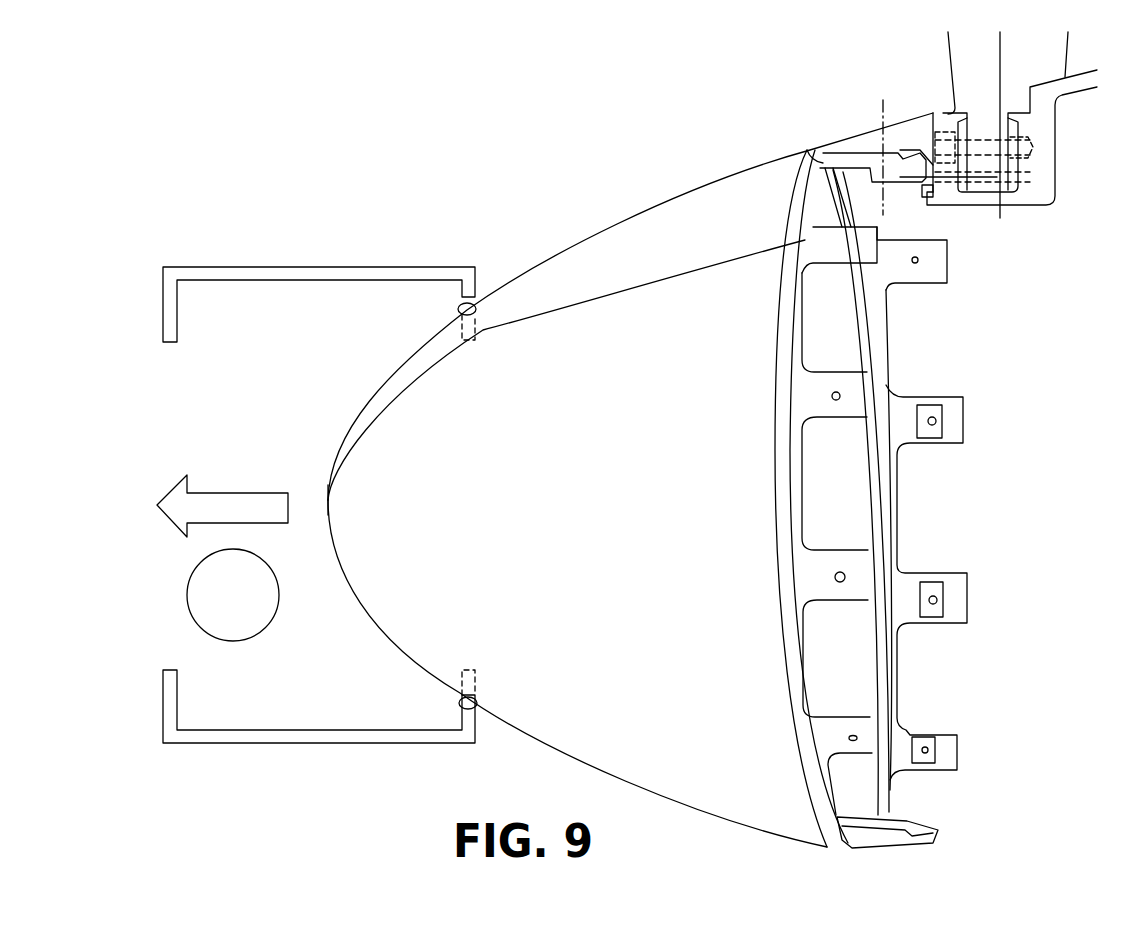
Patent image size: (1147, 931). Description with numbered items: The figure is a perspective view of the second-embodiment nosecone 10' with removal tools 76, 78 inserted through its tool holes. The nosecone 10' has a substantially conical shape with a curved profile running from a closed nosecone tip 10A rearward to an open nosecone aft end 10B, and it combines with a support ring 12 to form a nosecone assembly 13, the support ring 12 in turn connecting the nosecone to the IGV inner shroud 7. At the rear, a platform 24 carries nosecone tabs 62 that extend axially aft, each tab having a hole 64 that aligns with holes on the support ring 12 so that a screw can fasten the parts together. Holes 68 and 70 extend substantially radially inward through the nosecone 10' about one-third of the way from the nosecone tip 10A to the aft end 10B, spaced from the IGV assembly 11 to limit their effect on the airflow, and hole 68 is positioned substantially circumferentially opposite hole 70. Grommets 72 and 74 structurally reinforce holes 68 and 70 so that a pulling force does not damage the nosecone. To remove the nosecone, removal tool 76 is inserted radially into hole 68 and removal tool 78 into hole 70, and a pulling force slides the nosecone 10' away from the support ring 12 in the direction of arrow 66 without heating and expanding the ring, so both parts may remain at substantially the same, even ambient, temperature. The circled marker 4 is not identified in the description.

The engine 4 is at (233, 595).
The IGV inner shroud 7 is at (1057, 177).
The nosecone 10' is at (630, 475).
The nosecone tip 10A is at (328, 497).
The nosecone aft end 10B is at (938, 833).
The IGV assembly 11 is at (1037, 222).
The support ring 12 is at (915, 132).
The nosecone assembly 13 is at (702, 112).
The platform 24 is at (783, 498).
The nosecone tabs 62 is at (855, 388).
The hole 64 is at (933, 598).
The arrow 66 is at (222, 493).
The hole 68 is at (472, 300).
The hole 70 is at (470, 712).
The grommet 72 is at (478, 304).
The grommet 74 is at (478, 713).
The removal tool 76 is at (286, 272).
The removal tool 78 is at (286, 740).